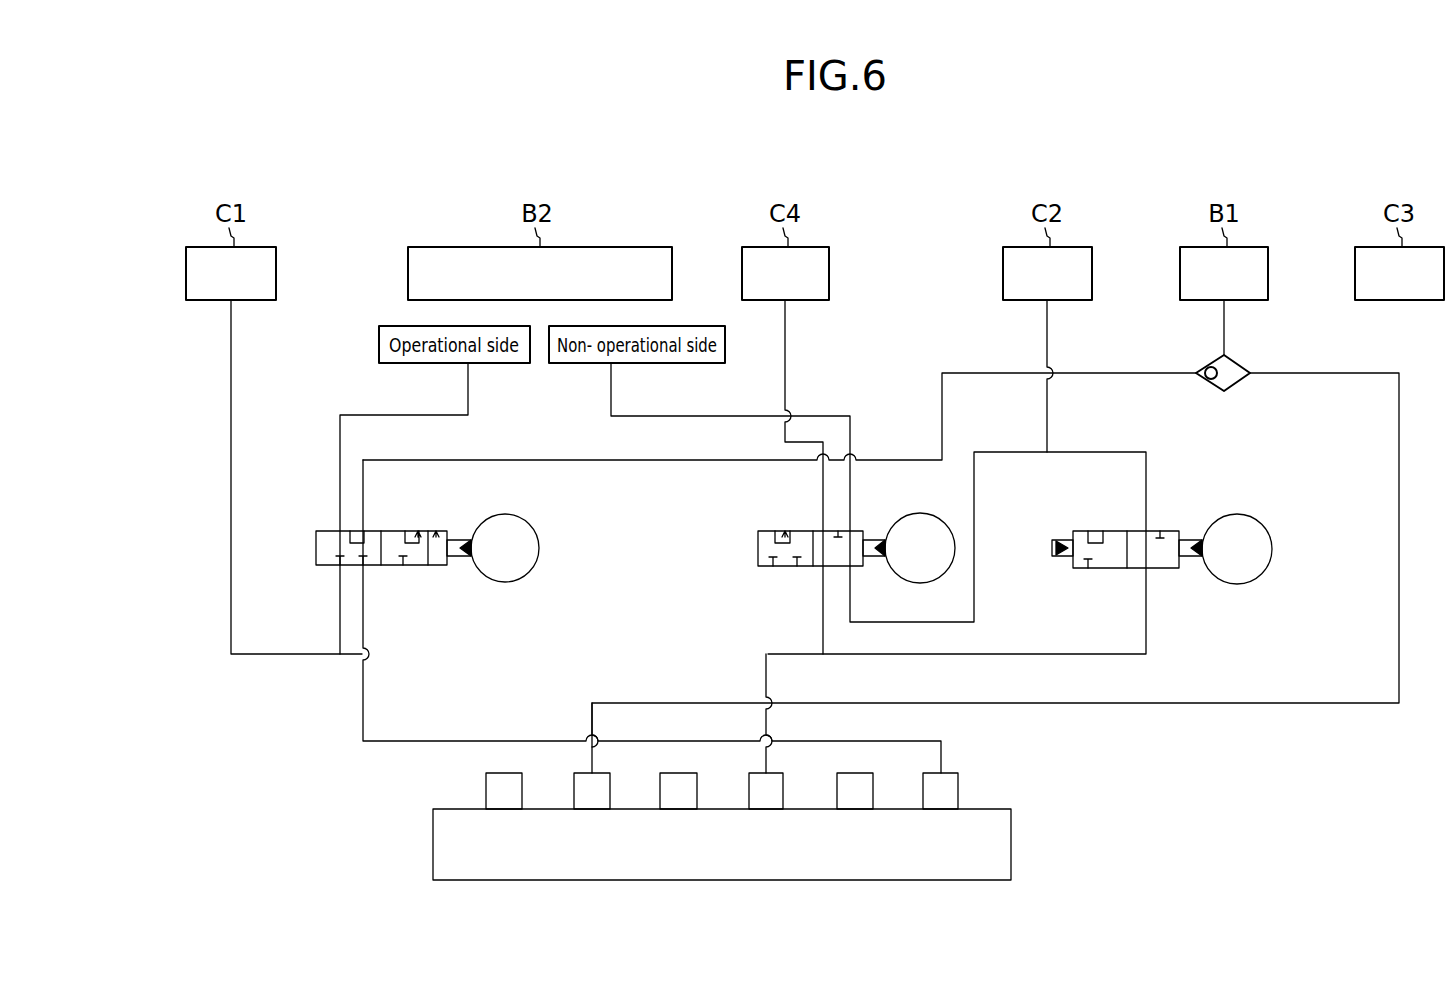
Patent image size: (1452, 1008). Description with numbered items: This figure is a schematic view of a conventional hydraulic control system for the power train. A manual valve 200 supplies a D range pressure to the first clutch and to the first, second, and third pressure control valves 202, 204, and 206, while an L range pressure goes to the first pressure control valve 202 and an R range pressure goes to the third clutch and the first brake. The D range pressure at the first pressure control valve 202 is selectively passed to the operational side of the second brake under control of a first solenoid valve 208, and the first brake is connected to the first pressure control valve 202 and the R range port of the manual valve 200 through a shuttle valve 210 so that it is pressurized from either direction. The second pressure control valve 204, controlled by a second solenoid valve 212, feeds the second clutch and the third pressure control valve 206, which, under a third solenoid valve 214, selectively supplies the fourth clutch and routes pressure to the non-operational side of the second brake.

The manual valve 200 is at (1012, 842).
The first pressure control valve 202 is at (318, 574).
The second pressure control valve 204 is at (1190, 585).
The third pressure control valve 206 is at (770, 574).
The first solenoid valve 208 is at (540, 548).
The shuttle valve 210 is at (1246, 393).
The second solenoid valve 212 is at (1272, 549).
The third solenoid valve 214 is at (924, 513).